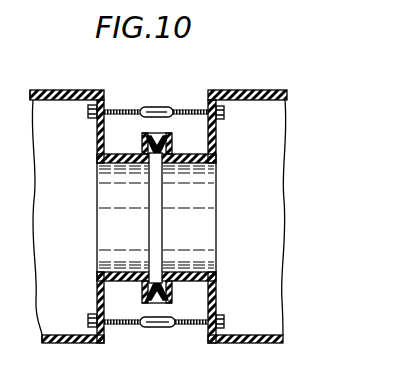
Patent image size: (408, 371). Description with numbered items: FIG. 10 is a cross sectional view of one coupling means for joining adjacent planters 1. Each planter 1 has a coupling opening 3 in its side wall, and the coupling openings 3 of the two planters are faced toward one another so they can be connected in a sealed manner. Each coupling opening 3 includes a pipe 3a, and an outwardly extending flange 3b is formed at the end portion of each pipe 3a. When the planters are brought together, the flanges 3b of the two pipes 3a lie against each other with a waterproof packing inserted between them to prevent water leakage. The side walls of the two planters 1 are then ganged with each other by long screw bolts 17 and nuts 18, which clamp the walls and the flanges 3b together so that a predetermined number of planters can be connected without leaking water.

The planter 1 is at (52, 88).
The coupling opening 3 is at (107, 228).
The pipe 3a is at (118, 166).
The flange 3b is at (104, 148).
The long screw bolt 17 is at (88, 321).
The nut 18 is at (224, 322).